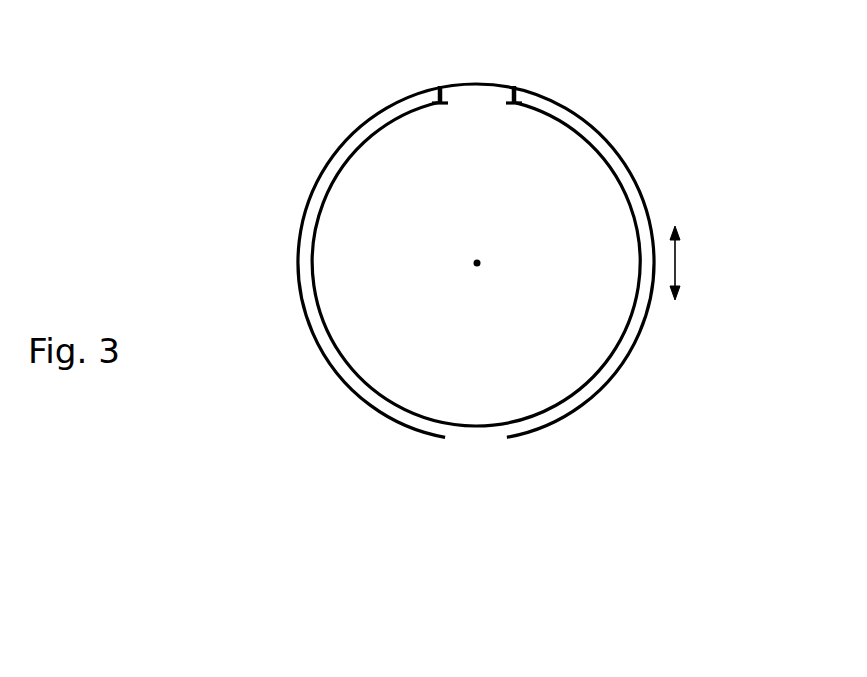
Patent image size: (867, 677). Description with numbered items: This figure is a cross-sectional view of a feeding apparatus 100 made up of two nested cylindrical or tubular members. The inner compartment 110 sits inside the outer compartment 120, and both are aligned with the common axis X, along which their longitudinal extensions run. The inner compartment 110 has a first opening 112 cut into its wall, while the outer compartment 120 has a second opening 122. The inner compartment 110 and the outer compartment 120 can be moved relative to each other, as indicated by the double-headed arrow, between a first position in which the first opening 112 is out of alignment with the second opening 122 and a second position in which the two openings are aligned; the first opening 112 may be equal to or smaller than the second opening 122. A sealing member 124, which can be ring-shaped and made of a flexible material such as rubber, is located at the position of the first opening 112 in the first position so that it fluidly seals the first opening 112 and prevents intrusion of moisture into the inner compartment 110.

The feeding apparatus 100 is at (290, 74).
The inner compartment 110 is at (580, 126).
The first opening 112 is at (473, 102).
The outer compartment 120 is at (567, 418).
The second opening 122 is at (482, 442).
The sealing member 124 is at (432, 88).
The axis X is at (473, 262).